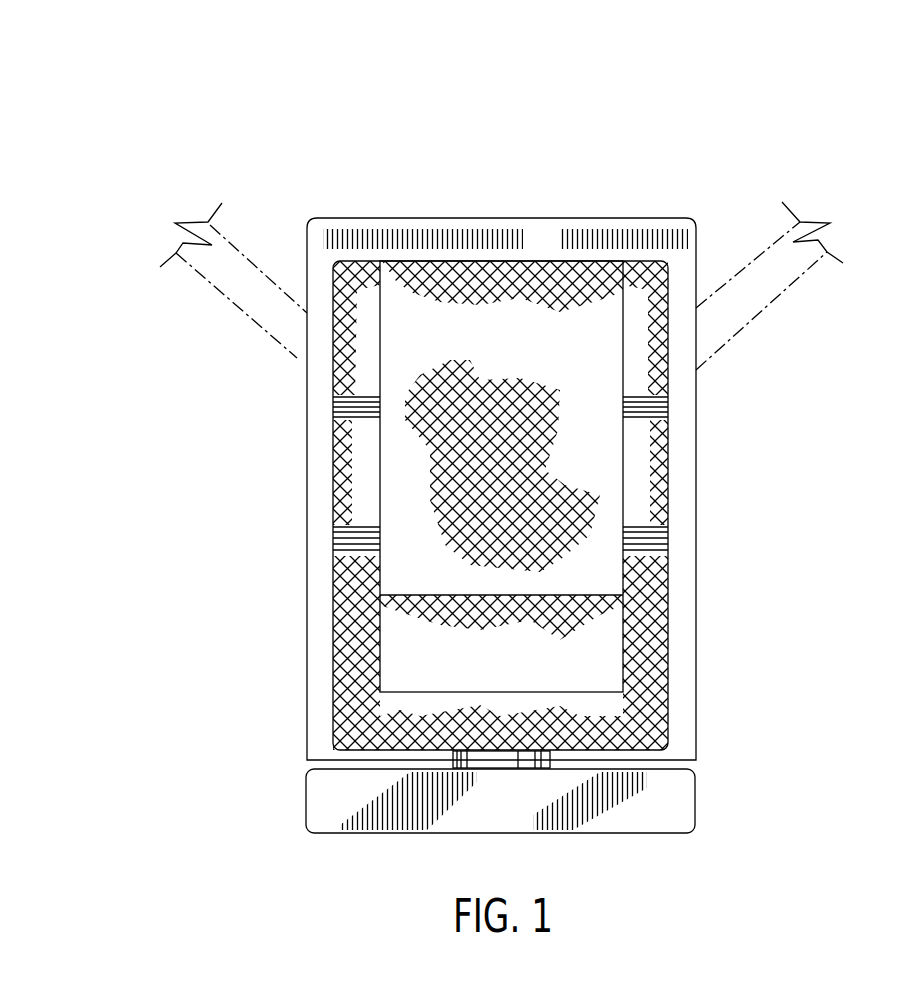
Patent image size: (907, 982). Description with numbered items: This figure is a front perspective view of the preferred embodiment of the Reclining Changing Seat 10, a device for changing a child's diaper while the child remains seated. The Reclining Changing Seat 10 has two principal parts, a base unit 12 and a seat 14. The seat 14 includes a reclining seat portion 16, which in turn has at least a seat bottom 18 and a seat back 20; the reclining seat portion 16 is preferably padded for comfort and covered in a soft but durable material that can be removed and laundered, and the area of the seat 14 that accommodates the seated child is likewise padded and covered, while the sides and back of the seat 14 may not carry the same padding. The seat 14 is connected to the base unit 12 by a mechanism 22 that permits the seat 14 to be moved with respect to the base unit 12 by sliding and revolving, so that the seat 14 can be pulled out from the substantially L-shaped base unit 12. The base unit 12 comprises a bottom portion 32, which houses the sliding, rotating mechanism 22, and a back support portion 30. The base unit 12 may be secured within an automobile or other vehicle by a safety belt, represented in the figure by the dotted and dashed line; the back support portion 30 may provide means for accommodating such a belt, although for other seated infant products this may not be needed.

The Reclining Changing Seat 10 is at (702, 170).
The base unit 12 is at (683, 762).
The seat 14 is at (653, 485).
The reclining seat portion 16 is at (507, 465).
The seat bottom 18 is at (475, 607).
The seat back 20 is at (466, 347).
The mechanism 22 is at (453, 759).
The back support portion 30 is at (442, 242).
The bottom portion 32 is at (558, 815).